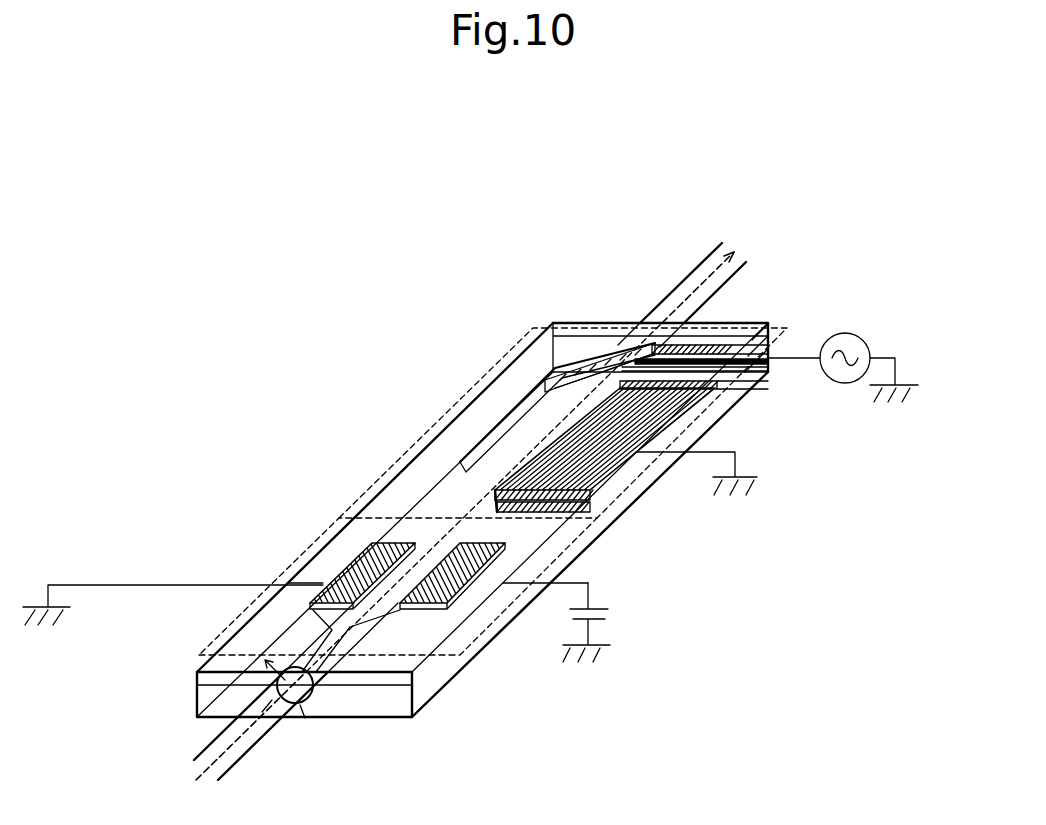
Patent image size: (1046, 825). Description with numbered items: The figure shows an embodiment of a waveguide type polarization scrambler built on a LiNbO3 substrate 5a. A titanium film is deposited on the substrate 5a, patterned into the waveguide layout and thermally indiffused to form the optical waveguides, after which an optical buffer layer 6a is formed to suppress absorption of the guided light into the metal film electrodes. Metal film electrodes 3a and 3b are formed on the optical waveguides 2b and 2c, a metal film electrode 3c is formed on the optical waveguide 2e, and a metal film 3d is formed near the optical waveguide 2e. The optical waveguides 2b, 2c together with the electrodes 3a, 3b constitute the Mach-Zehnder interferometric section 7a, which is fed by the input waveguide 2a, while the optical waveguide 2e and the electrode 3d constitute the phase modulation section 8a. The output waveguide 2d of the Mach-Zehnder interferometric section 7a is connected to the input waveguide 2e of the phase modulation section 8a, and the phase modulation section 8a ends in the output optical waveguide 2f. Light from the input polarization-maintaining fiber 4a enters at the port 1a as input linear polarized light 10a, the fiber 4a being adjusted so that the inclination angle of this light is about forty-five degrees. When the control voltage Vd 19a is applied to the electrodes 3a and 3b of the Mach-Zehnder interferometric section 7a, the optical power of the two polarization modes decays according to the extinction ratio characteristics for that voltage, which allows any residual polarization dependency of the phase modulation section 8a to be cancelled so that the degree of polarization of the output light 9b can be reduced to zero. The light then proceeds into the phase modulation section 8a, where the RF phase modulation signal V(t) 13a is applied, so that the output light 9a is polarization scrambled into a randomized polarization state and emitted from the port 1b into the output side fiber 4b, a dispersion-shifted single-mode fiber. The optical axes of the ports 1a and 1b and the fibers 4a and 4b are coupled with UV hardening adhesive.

The port 1a is at (307, 700).
The port 1b is at (640, 338).
The input waveguide of the Mach-Zehnder interferometric section 2a is at (322, 645).
The optical waveguide 2b is at (325, 612).
The optical waveguide 2c is at (410, 612).
The output waveguide of the Mach-Zehnder interferometric section 2d is at (455, 500).
The input waveguide of the phase modulation section 2e is at (477, 505).
The output optical waveguide of the phase modulation section 2f is at (603, 325).
The metal film electrode 3a is at (333, 563).
The metal film electrode 3b is at (503, 565).
The metal film electrode 3c is at (740, 402).
The metal film 3d is at (727, 338).
The input polarization-maintaining fiber 4a is at (212, 737).
The output side fiber 4b is at (692, 268).
The LiNbO3 substrate 5a is at (742, 420).
The optical buffer layer 6a is at (771, 323).
The Mach-Zehnder interferometric section 7a is at (283, 577).
The phase modulation section 8a is at (447, 417).
The output light 9a is at (212, 757).
The output light 9b is at (687, 302).
The input linear polarized light 10a is at (367, 717).
The RF phase modulation signal V(t) 13a is at (845, 333).
The control voltage Vd 19a is at (612, 612).